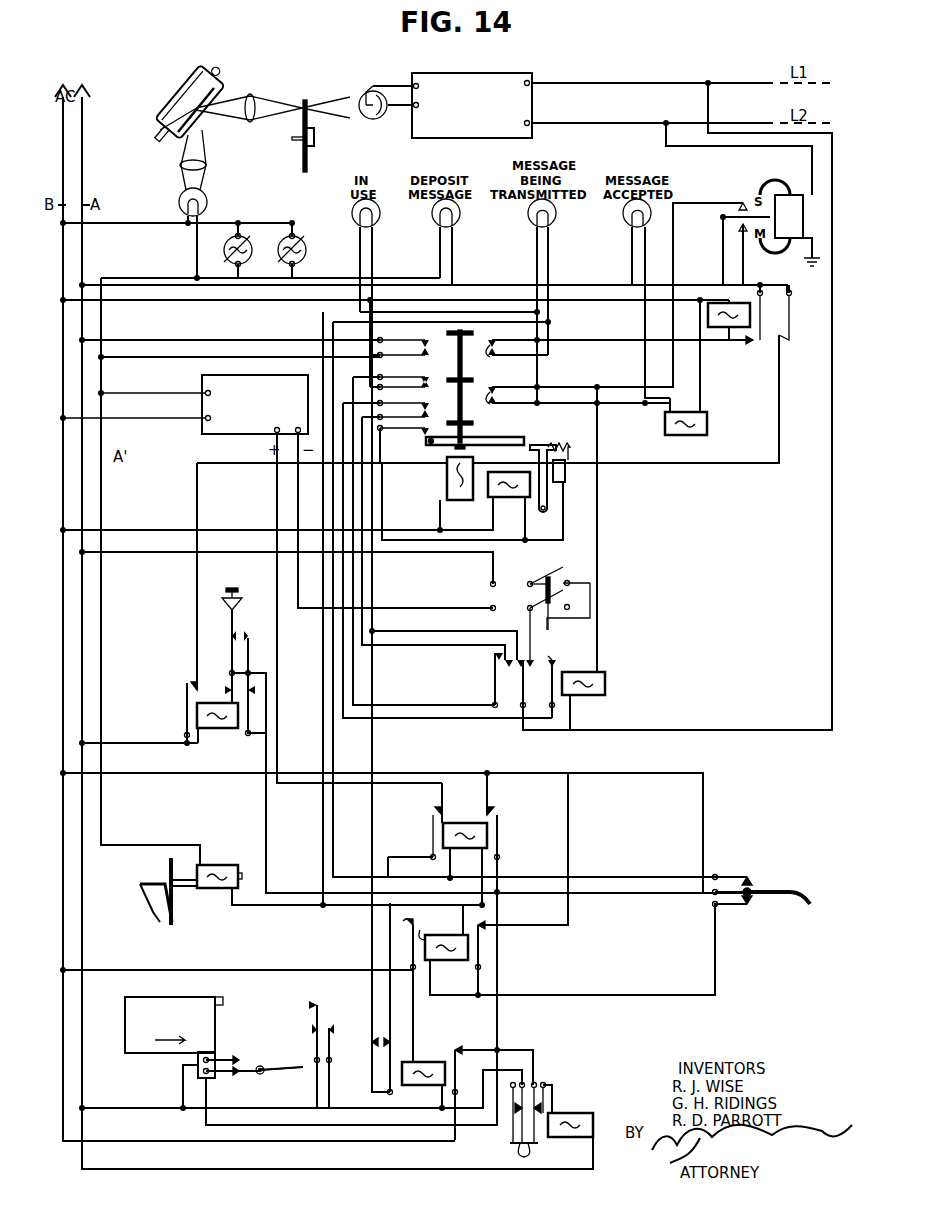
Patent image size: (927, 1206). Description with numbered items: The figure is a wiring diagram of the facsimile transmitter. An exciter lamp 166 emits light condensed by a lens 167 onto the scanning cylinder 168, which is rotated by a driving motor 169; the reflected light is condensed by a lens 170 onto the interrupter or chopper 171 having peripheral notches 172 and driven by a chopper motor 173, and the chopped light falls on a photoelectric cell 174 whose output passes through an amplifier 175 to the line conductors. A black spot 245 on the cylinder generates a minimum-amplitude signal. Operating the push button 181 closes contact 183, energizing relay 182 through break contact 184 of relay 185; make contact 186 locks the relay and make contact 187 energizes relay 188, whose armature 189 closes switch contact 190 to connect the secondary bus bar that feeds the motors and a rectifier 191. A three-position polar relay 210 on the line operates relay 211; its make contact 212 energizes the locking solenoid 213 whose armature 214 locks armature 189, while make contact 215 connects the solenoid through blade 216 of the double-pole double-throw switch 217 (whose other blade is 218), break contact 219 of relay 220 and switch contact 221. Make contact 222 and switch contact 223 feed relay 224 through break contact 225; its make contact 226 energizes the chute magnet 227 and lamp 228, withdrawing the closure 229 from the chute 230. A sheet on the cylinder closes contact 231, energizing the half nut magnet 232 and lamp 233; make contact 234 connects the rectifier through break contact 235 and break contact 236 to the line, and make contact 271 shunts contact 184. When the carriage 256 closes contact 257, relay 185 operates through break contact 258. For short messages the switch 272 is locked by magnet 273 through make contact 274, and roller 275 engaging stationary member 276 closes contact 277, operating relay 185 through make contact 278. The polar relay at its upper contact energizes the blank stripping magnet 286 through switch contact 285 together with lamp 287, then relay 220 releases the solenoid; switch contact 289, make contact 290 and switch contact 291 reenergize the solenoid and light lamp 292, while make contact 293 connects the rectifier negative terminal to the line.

The scanning cylinder 168 is at (215, 73).
The black spot 245 is at (185, 102).
The lens 170 is at (251, 95).
The peripheral notches 172 is at (306, 100).
The interrupter or chopper 171 is at (308, 158).
The lens 167 is at (180, 165).
The exciter lamp 166 is at (179, 202).
The driving motor 169 is at (245, 235).
The chopper motor 173 is at (305, 246).
The photoelectric cell 174 is at (375, 120).
The amplifier 175 is at (500, 73).
The lamp 292 is at (378, 220).
The lamp 228 is at (459, 219).
The lamp 233 is at (554, 219).
The lamp 287 is at (625, 223).
The three-position polar relay 210 is at (795, 185).
The switch contact 190 is at (420, 352).
The switch contact 289 is at (432, 372).
The switch contact 221 is at (423, 402).
The switch contact 291 is at (433, 418).
The switch contact 223 is at (490, 350).
The switch contact 285 is at (485, 402).
The armature 189 is at (506, 438).
The armature 214 is at (548, 447).
The make contact 215 is at (569, 448).
The locking solenoid 213 is at (508, 472).
The relay 188 is at (447, 488).
The rectifier 191 is at (234, 430).
The relay 211 is at (729, 330).
The make contact 222 is at (757, 345).
The make contact 212 is at (784, 343).
The blank stripping magnet 286 is at (686, 436).
The push button 181 is at (235, 588).
The push button contact 183 is at (240, 642).
The make contact 186 is at (234, 670).
The make contact 187 is at (193, 683).
The relay 182 is at (224, 730).
The switch blade 216 is at (559, 570).
The double-pole, double-throw switch 217 is at (530, 606).
The break contact 236 is at (530, 634).
The switch blade 218 is at (560, 621).
The break contact 219 is at (550, 655).
The make contact 290 is at (498, 675).
The make contact 293 is at (524, 672).
The relay 220 is at (585, 697).
The make contact 234 is at (440, 815).
The half nut magnet 232 is at (465, 823).
The make contact 271 is at (498, 810).
The break contact 258 is at (415, 914).
The make contact 226 is at (422, 930).
The relay 224 is at (447, 960).
The closure 229 is at (170, 876).
The chute 230 is at (155, 912).
The chute magnet 227 is at (216, 890).
The contact 231 is at (753, 882).
The break contact 225 is at (748, 900).
The carriage 256 is at (176, 1010).
The contact 257 is at (322, 1028).
The contact 277 is at (250, 1050).
The roller 275 is at (264, 1066).
The stationary member 276 is at (268, 1074).
The break contact 235 is at (396, 1035).
The relay 185 is at (424, 1062).
The break contact 184 is at (457, 1048).
The magnet 273 is at (572, 1113).
The make contact 278 is at (513, 1117).
The switch 272 is at (510, 1143).
The make contact 274 is at (538, 1118).